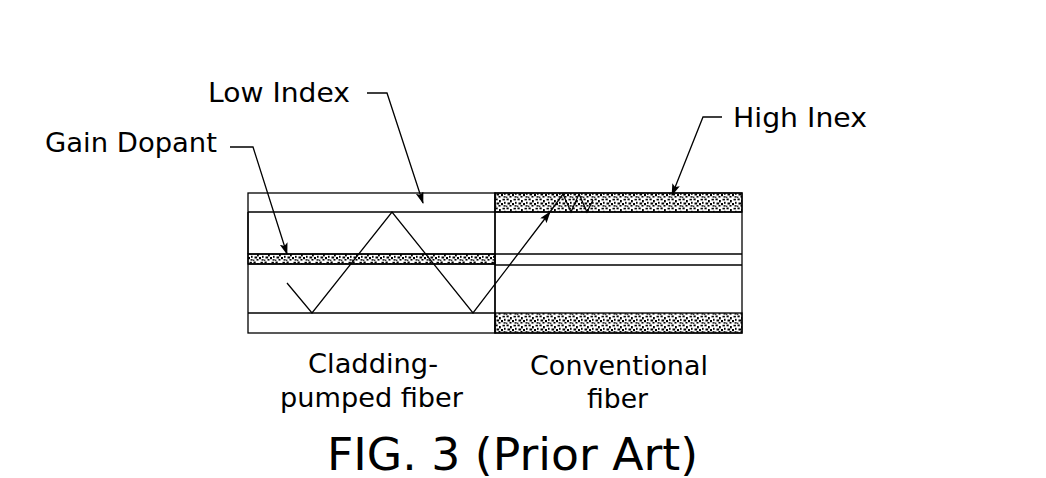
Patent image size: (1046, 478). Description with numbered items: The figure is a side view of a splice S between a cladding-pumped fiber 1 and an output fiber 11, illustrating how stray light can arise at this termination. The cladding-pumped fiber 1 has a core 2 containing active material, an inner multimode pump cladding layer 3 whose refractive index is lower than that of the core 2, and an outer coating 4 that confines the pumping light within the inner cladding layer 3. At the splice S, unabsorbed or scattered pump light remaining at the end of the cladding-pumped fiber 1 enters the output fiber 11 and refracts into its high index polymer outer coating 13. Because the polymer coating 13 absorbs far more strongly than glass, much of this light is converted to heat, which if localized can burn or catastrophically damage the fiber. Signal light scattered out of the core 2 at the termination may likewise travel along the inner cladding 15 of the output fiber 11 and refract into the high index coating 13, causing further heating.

The cladding-pumped fiber 1 is at (238, 343).
The core 2 is at (256, 257).
The inner multimode cladding layer 3 is at (256, 232).
The outer coating 4 is at (256, 203).
The output fiber 11 is at (778, 350).
The high index polymer outer coating 13 is at (742, 202).
The inner cladding 15 is at (733, 238).
The splice S is at (497, 237).